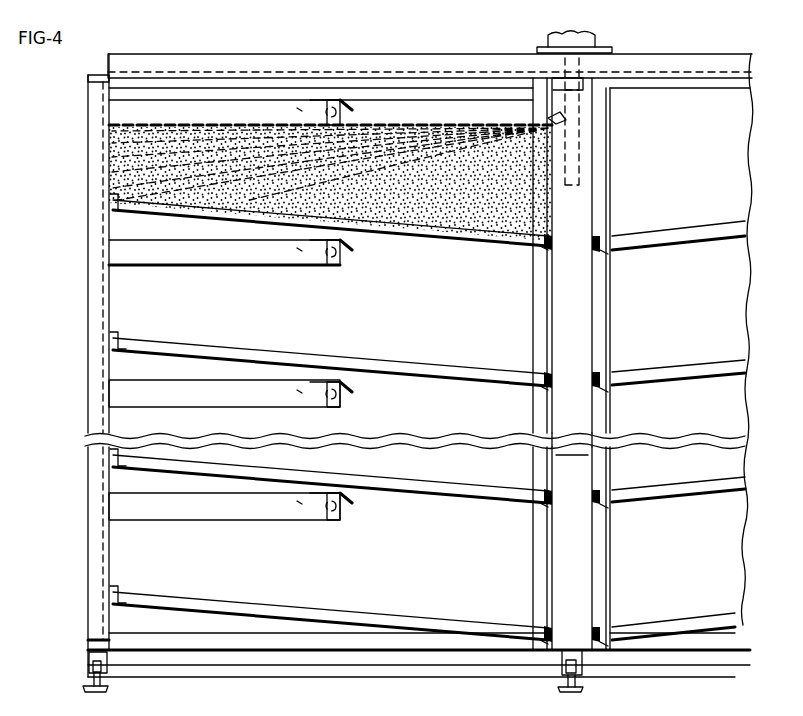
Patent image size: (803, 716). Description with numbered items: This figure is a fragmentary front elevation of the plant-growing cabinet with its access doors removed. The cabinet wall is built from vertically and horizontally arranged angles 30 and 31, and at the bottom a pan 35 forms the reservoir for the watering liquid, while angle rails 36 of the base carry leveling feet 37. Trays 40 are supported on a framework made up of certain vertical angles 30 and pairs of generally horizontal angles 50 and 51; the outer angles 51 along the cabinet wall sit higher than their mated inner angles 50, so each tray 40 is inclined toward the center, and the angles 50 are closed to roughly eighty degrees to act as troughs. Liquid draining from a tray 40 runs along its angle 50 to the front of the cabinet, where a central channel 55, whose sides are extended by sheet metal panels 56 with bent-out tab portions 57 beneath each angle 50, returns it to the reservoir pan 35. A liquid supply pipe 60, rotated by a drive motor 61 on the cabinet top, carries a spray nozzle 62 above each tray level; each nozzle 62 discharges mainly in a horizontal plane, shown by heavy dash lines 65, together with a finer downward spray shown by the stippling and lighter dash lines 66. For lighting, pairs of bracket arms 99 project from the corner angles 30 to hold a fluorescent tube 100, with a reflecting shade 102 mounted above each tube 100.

The vertical angle 30 is at (95, 190).
The horizontal angle 31 is at (298, 62).
The pan 35 is at (398, 675).
The angle rail 36 is at (448, 662).
The leveling foot 37 is at (105, 688).
The tray 40 is at (446, 238).
The angle 50 is at (545, 247).
The angle 51 is at (109, 213).
The channel 55 is at (563, 430).
The sheet metal panel 56 is at (563, 460).
The tab portion 57 is at (548, 252).
The liquid supply pipe 60 is at (592, 142).
The drive motor 61 is at (555, 33).
The spray nozzle 62 is at (555, 118).
The heavy dash lines 65 is at (415, 125).
The stippling and lighter dash lines 66 is at (172, 183).
The bracket arm 99 is at (185, 260).
The fluorescent tube 100 is at (342, 270).
The reflecting shade 102 is at (346, 248).